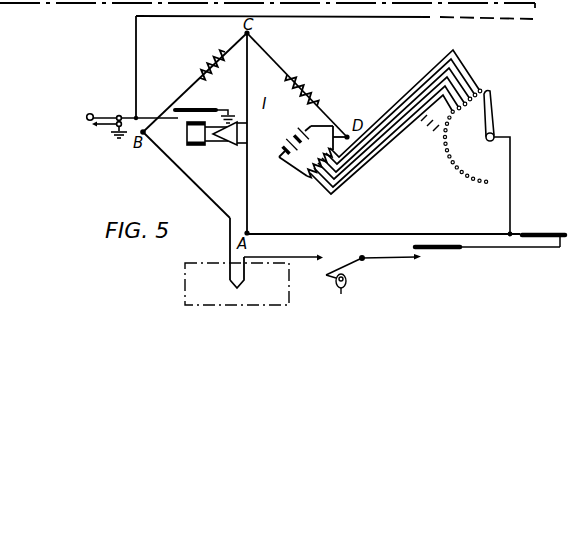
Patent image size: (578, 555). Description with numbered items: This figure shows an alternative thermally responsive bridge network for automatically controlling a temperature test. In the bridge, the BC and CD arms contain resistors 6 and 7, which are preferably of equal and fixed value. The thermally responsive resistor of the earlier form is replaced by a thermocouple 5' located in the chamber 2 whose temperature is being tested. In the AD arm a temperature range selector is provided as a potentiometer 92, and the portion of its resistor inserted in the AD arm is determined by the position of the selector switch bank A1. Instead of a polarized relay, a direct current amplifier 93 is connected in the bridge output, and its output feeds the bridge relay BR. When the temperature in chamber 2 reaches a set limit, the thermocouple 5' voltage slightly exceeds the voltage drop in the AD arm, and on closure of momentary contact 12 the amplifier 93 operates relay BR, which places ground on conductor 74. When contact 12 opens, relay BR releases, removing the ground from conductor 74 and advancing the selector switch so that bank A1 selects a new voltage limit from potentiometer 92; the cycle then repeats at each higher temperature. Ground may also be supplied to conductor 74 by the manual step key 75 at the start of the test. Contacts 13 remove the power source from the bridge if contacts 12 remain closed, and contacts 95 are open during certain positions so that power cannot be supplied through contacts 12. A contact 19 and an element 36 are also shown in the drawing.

The conductor 74 is at (137, 56).
The resistor 6 is at (213, 56).
The contact 19 is at (175, 116).
The manual step key 75 is at (88, 120).
The bridge relay BR is at (188, 139).
The direct current amplifier 93 is at (232, 147).
The resistor 7 is at (301, 82).
The potentiometer 92 is at (288, 167).
The selector switch bank A1 is at (410, 142).
The thermocouple 5' is at (256, 275).
The chamber 2 is at (291, 266).
The momentary contacts 12 is at (331, 266).
The indicator lamp 36 is at (347, 283).
The contacts 13 is at (425, 250).
The contacts 95 is at (560, 243).